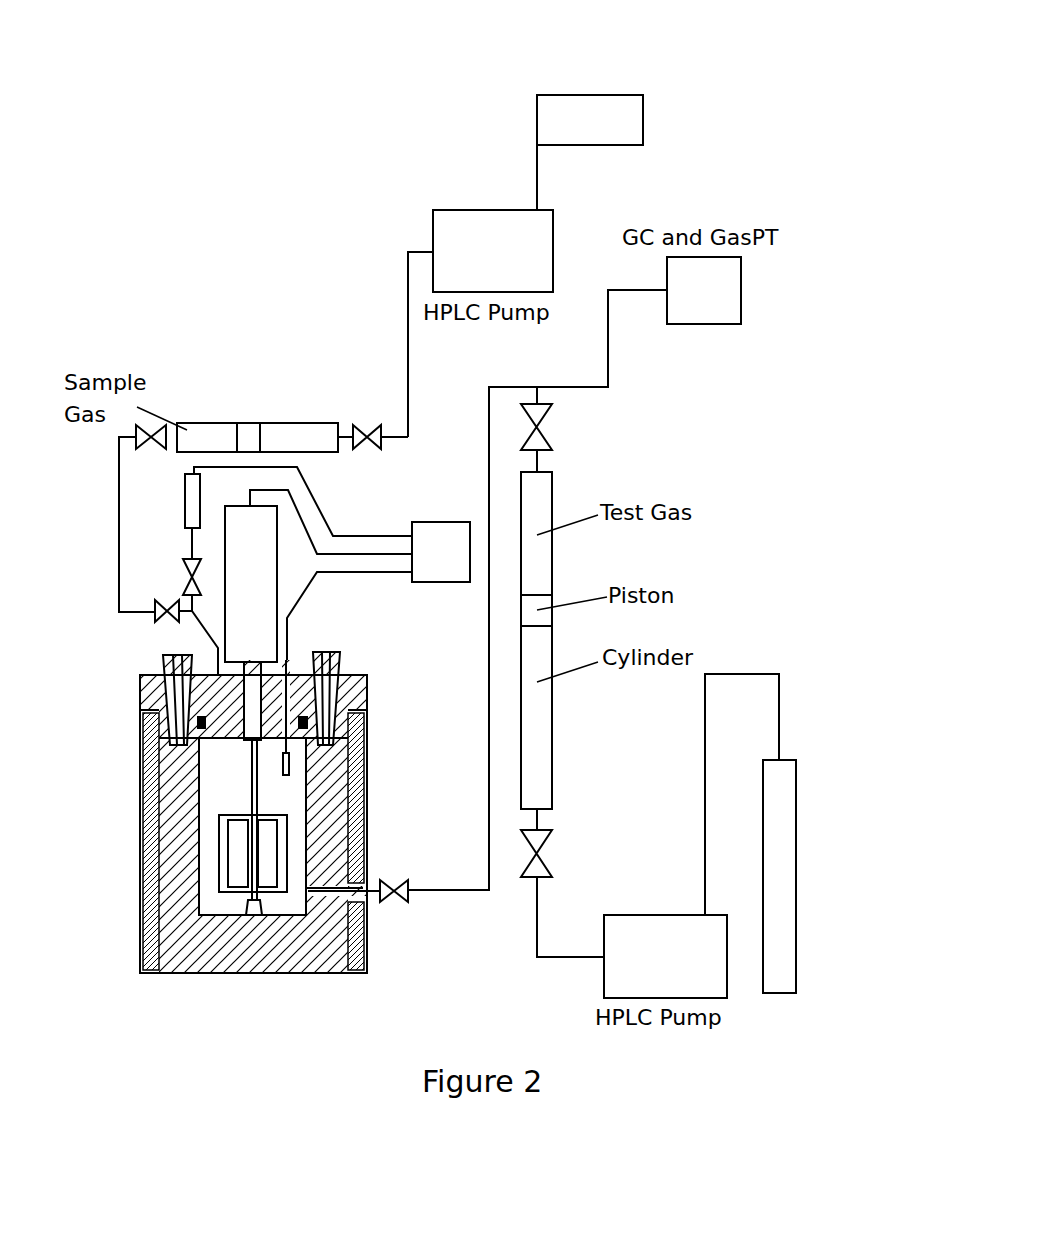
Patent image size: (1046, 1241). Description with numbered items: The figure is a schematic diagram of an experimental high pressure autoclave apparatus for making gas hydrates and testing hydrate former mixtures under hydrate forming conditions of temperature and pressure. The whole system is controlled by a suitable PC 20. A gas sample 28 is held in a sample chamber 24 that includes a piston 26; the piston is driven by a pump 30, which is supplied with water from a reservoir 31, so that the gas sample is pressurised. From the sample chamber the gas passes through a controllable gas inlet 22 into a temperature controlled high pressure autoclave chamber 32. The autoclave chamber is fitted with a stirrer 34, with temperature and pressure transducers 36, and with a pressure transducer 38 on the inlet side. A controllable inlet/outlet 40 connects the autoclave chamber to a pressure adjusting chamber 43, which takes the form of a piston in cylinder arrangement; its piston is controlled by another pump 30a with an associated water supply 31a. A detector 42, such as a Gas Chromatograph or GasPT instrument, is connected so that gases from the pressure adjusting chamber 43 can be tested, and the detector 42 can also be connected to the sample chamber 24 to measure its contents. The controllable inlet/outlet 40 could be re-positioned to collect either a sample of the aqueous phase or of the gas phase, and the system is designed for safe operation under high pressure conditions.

The PC 20 is at (442, 582).
The controllable gas inlet 22 is at (119, 613).
The sample chamber 24 is at (202, 423).
The piston 26 is at (250, 423).
The gas sample 28 is at (223, 423).
The pump 30 is at (433, 228).
The another pump 30a is at (667, 915).
The reservoir 31 is at (595, 95).
The associated water supply 31a is at (796, 876).
The high pressure autoclave chamber 32 is at (183, 972).
The stirrer 34 is at (220, 862).
The temperature and pressure transducers 36 is at (290, 690).
The pressure transducer 38 is at (185, 502).
The controllable inlet/outlet 40 is at (453, 891).
The detector 42 is at (741, 290).
The pressure adjusting chamber 43 is at (552, 735).